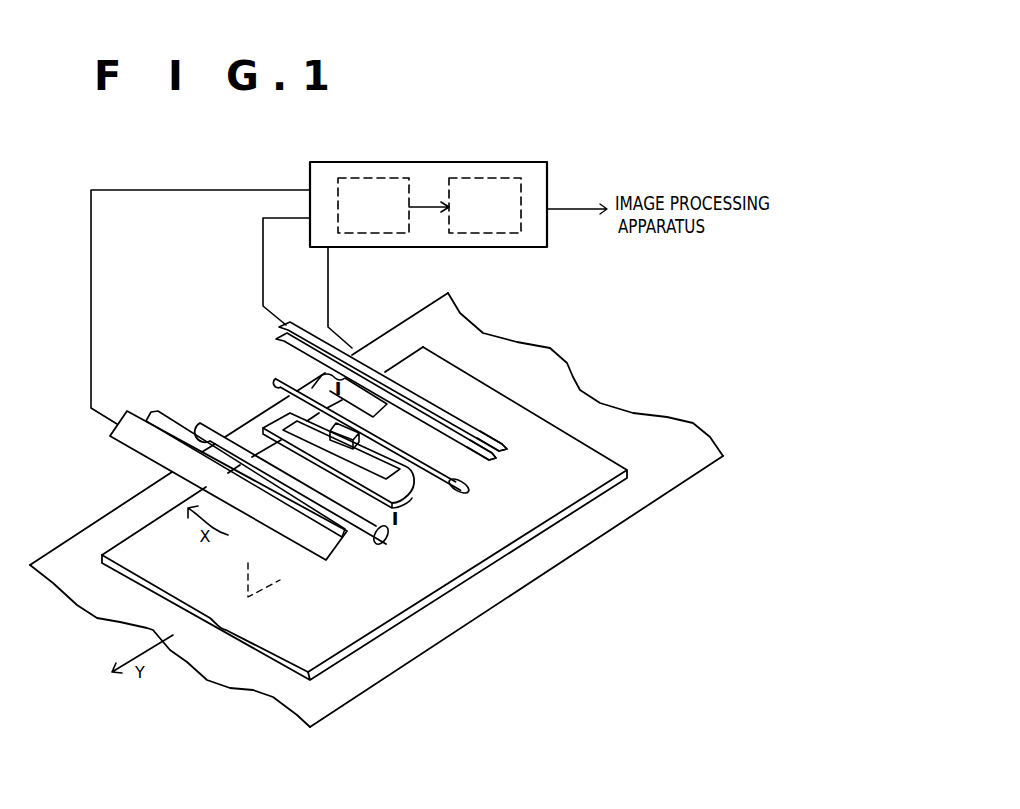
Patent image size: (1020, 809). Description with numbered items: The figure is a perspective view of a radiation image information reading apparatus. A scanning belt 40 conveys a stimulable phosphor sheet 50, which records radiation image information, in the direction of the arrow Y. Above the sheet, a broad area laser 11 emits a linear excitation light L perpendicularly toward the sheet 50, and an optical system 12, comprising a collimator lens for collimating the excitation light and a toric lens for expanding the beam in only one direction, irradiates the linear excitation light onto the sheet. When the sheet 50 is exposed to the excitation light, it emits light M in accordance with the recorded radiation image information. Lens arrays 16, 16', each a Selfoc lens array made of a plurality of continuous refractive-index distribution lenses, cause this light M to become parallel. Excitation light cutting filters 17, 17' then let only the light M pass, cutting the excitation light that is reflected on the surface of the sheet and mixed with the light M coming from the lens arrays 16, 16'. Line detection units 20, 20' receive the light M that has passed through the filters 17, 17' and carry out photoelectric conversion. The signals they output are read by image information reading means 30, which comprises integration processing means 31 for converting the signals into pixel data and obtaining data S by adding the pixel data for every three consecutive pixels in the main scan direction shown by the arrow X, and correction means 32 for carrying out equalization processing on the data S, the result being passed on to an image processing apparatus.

The broad area laser 11 is at (365, 446).
The optical system 12 is at (420, 473).
The lens array 16 is at (394, 446).
The excitation light cutting filter 17 is at (495, 458).
The line detection unit 20 is at (365, 388).
The image information reading means 30 is at (497, 162).
The integration processing means 31 is at (360, 178).
The correction means 32 is at (449, 184).
The scanning belt 40 is at (557, 387).
The stimulable phosphor sheet 50 is at (360, 625).
The lens array 16' is at (315, 493).
The excitation light cutting filter 17' is at (272, 498).
The line detection unit 20' is at (228, 509).